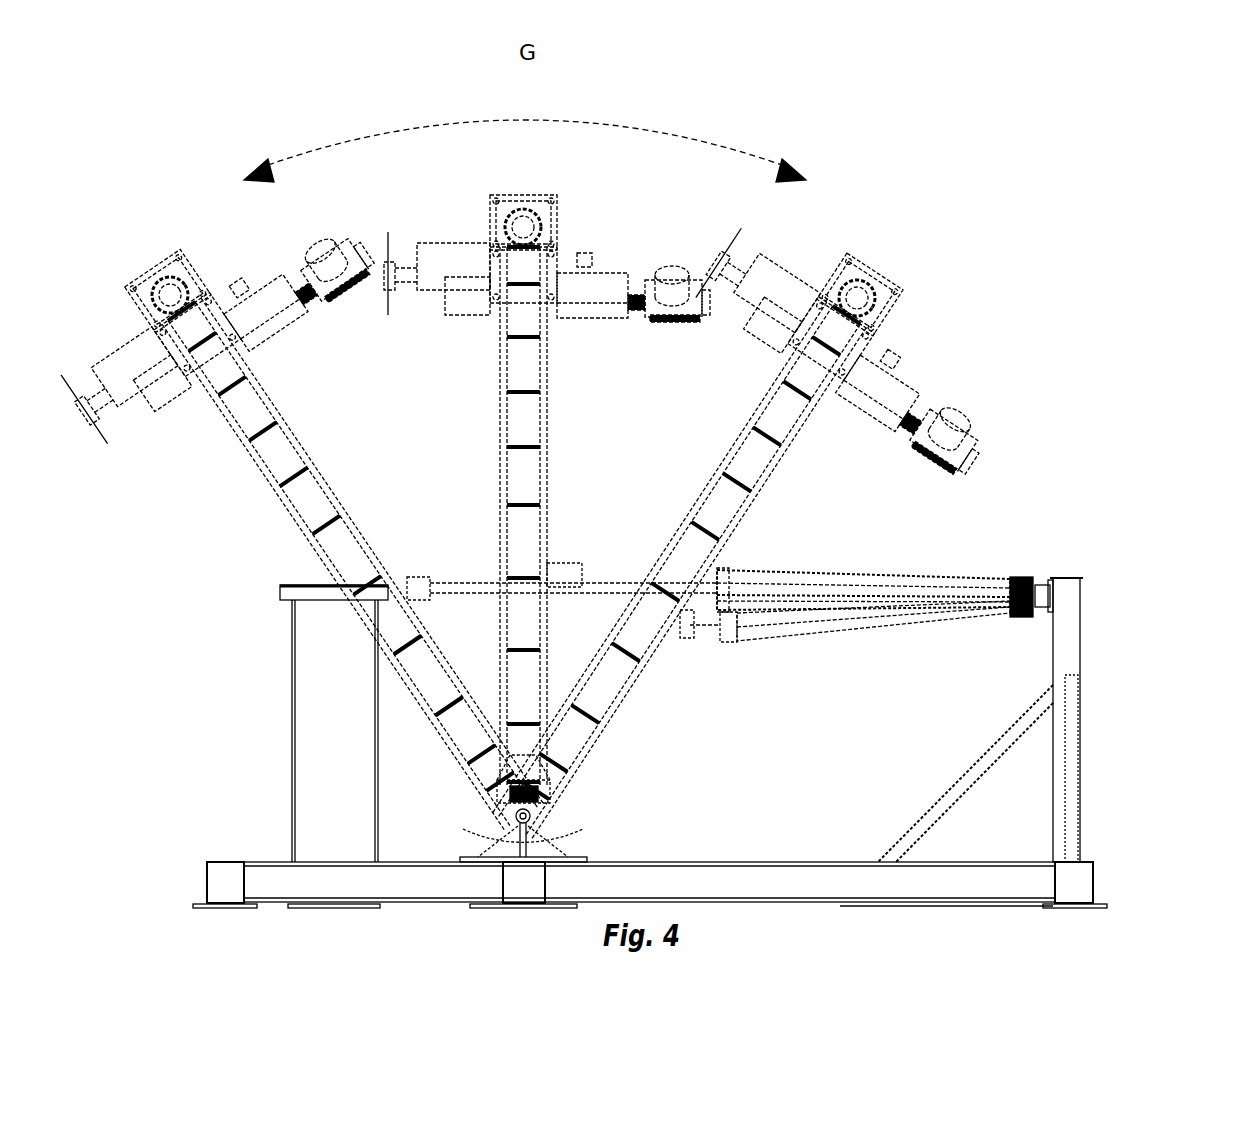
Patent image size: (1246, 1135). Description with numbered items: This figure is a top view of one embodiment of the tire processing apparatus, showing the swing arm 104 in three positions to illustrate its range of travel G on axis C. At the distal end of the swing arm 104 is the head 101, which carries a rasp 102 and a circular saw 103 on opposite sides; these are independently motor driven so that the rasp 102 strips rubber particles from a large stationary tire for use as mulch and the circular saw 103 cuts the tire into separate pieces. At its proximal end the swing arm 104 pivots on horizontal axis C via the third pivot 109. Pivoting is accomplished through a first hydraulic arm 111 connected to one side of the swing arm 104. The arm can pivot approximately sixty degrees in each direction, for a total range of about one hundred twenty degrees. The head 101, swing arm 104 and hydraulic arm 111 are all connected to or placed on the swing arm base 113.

The head 101 is at (520, 195).
The rasp 102 is at (646, 257).
The circular saw 103 is at (421, 239).
The swing arm 104 is at (559, 515).
The third pivot 109 is at (545, 802).
The first hydraulic arm 111 is at (840, 595).
The swing arm base 113 is at (930, 888).